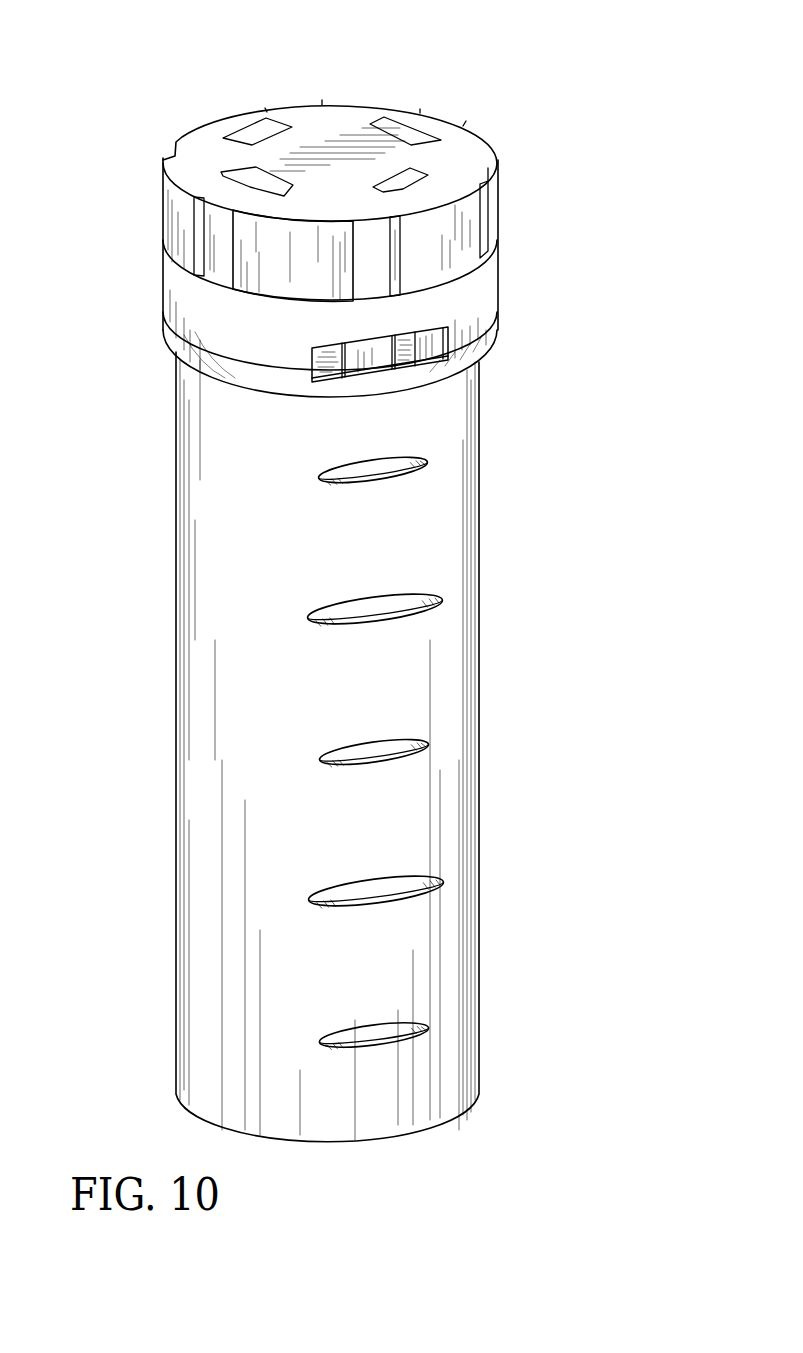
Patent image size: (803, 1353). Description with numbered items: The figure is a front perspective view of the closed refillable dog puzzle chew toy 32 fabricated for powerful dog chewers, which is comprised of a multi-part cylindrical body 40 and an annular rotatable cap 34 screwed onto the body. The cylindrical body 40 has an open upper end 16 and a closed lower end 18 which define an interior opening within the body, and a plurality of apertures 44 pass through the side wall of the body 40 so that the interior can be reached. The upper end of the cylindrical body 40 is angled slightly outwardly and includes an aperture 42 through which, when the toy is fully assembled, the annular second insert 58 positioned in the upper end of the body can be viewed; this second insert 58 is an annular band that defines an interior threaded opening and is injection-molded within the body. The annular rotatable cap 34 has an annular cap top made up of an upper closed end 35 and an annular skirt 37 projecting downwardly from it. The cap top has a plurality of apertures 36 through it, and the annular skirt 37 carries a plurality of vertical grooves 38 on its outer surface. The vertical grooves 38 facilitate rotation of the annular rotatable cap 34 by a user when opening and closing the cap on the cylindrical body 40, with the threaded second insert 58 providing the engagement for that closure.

The refillable dog puzzle chew toy 32 is at (139, 92).
The open upper end 16 is at (163, 254).
The closed lower end 18 is at (443, 1125).
The annular rotatable cap 34 is at (163, 203).
The upper closed end 35 is at (356, 108).
The top apertures 36 is at (432, 173).
The annular skirt 37 is at (487, 223).
The vertical grooves 38 is at (373, 265).
The multi-part cylindrical body 40 is at (188, 316).
The aperture 42 is at (450, 333).
The plurality of apertures 44 is at (393, 462).
The annular second insert 58 is at (368, 365).